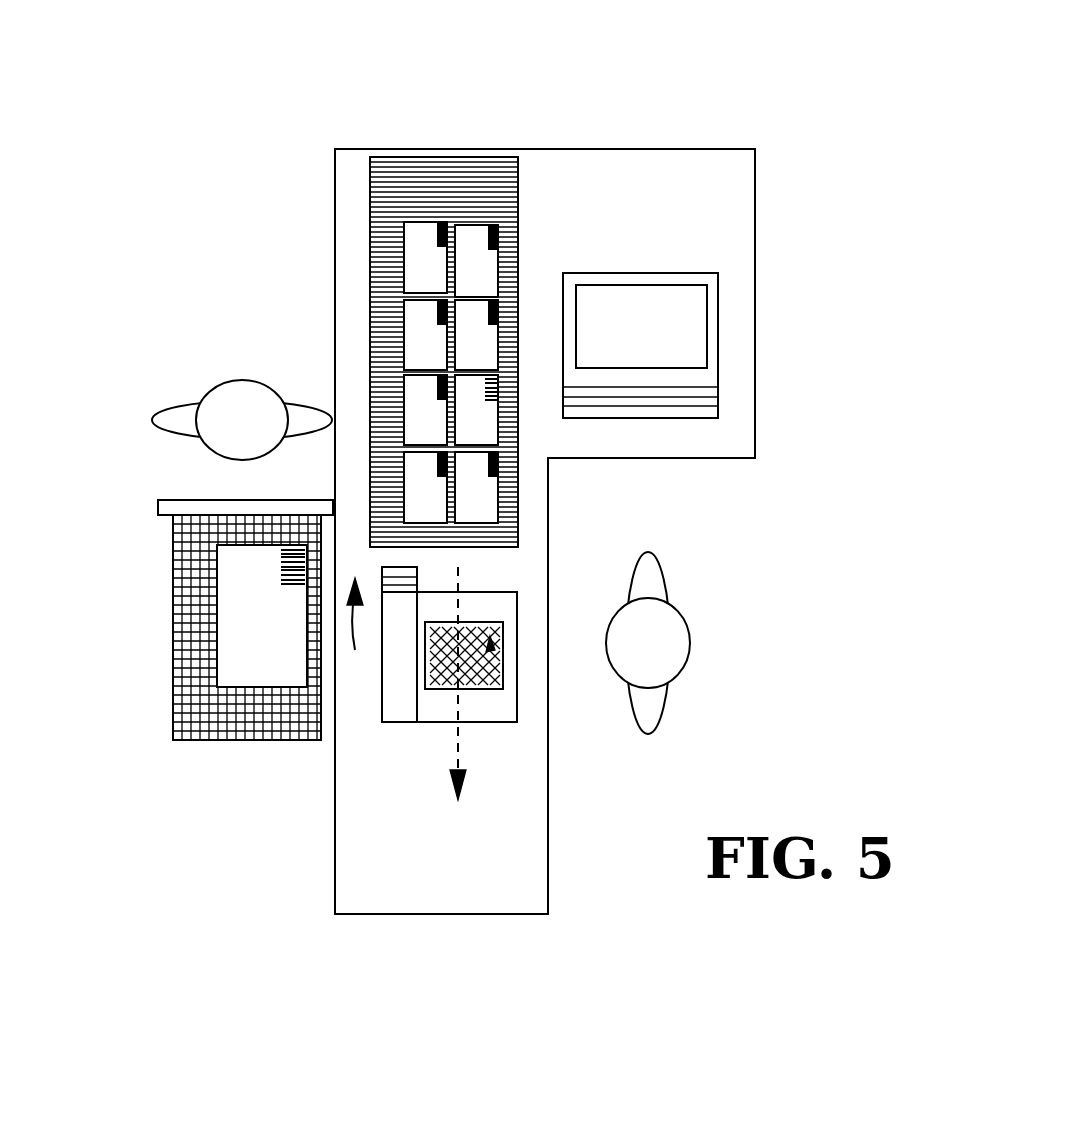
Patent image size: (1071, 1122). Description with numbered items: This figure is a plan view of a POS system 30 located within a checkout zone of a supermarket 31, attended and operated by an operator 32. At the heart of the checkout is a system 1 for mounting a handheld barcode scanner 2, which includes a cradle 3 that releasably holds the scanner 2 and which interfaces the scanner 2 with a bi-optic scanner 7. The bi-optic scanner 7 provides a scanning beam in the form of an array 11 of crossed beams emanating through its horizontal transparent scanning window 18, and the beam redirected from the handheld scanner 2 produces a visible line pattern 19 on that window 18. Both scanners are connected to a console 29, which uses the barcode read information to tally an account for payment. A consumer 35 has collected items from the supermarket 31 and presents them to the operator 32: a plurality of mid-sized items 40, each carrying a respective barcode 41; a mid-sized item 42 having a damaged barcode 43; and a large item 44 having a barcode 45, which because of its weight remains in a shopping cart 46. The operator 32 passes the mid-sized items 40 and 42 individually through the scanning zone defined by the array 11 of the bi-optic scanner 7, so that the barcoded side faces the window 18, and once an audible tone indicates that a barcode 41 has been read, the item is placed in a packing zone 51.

The system 1 is at (406, 683).
The handheld barcode scanner 2 is at (380, 565).
The cradle 3 is at (418, 574).
The bi-optic scanner 7 is at (430, 723).
The array 11 is at (497, 685).
The horizontal transparent scanning window 18 is at (460, 715).
The visible line pattern 19 is at (492, 640).
The console 29 is at (695, 335).
The POS system 30 is at (163, 228).
The supermarket 31 is at (572, 80).
The operator 32 is at (665, 643).
The consumer 35 is at (236, 392).
The mid-sized items 40 is at (420, 258).
The barcode 41 is at (492, 222).
The mid-sized item 42 is at (485, 425).
The damaged barcode 43 is at (488, 393).
The large item 44 is at (235, 657).
The barcode 45 is at (290, 548).
The shopping cart 46 is at (238, 728).
The packing zone 51 is at (396, 895).